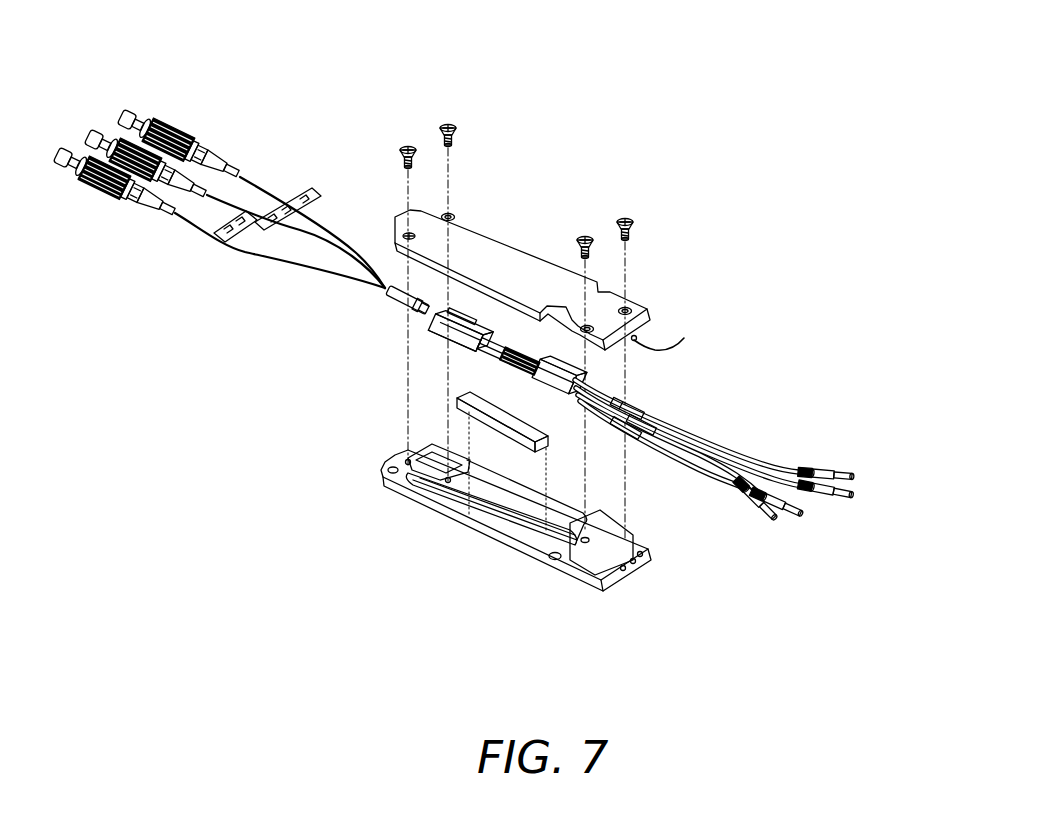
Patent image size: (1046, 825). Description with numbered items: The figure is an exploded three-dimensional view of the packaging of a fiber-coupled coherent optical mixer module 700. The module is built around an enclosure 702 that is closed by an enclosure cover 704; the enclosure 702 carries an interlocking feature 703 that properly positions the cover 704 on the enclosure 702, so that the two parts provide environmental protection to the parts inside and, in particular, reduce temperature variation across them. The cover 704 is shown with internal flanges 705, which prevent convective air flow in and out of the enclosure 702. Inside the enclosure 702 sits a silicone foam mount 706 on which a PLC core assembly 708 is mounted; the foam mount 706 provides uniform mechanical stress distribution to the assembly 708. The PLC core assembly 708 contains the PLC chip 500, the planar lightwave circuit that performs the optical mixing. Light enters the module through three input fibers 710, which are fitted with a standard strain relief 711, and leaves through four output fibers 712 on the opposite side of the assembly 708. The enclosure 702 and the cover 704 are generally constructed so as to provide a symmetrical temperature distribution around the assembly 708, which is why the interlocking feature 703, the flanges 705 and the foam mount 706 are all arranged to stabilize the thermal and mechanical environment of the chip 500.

The coherent optical mixer module 700 is at (592, 74).
The enclosure 702 is at (516, 538).
The interlocking feature 703 is at (479, 523).
The enclosure cover 704 is at (522, 333).
The internal flanges 705 is at (690, 338).
The silicone foam mount 706 is at (410, 461).
The PLC core assembly 708 is at (379, 373).
The PLC chip 500 is at (516, 375).
The input fibers 710 is at (218, 207).
The strain relief 711 is at (341, 319).
The output fibers 712 is at (714, 489).